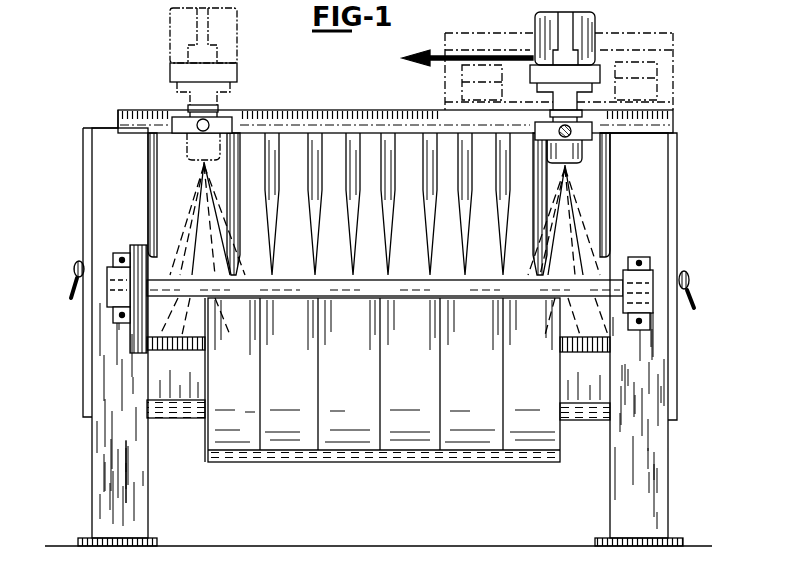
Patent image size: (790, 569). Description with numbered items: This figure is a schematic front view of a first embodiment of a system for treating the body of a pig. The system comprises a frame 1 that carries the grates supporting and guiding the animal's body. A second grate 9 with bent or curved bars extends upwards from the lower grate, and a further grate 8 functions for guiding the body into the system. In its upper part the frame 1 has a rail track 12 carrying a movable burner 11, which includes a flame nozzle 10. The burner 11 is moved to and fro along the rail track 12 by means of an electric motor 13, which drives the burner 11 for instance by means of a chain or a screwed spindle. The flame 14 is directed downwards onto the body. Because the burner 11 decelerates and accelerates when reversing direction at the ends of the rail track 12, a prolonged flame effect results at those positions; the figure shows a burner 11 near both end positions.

The frame 1 is at (653, 398).
The grate 8 is at (289, 440).
The second grate 9 is at (352, 157).
The flame nozzle 10 is at (574, 150).
The burner 11 is at (222, 25).
The rail track 12 is at (138, 118).
The electric motor 13 is at (645, 43).
The flame 14 is at (563, 238).